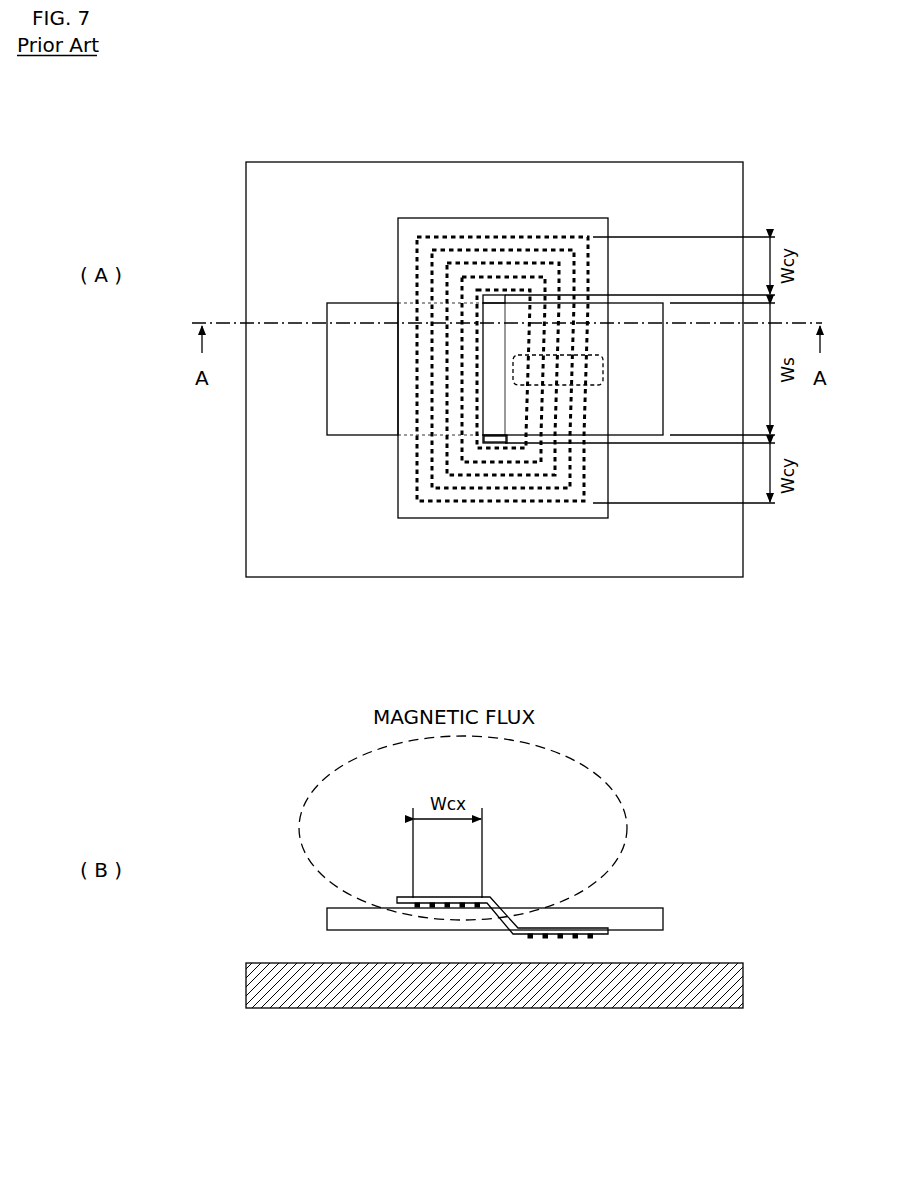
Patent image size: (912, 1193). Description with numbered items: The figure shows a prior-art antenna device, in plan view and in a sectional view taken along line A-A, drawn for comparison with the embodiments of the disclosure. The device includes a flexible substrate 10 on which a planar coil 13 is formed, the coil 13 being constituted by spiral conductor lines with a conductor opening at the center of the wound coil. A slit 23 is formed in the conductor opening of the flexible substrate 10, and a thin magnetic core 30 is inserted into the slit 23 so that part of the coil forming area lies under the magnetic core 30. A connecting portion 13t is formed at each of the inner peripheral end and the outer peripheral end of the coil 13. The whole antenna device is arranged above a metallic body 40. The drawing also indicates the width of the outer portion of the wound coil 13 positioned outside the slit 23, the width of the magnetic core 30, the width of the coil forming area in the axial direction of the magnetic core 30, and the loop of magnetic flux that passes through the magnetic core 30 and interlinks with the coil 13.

The metallic body 40 is at (743, 162).
The flexible substrate 10 is at (608, 218).
The coil 13 is at (417, 265).
The connecting portion 13t is at (513, 369).
The magnetic core 30 is at (663, 410).
The slit 23 is at (498, 443).